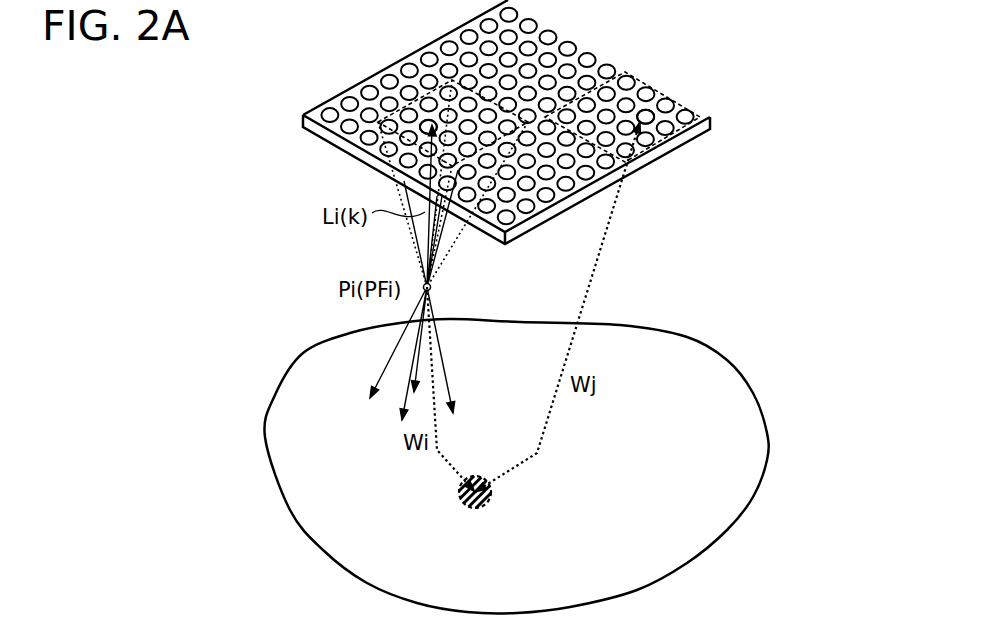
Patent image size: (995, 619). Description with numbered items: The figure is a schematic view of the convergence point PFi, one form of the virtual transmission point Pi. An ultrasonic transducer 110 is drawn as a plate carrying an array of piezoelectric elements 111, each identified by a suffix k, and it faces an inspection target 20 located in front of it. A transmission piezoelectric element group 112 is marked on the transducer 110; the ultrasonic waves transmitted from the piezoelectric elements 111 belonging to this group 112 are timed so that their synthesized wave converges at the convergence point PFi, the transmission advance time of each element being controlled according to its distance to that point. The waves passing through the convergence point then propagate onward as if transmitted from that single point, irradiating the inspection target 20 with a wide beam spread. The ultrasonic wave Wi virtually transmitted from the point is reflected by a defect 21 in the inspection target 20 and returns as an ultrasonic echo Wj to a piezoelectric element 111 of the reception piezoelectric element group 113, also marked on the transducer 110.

The ultrasonic transducer 110 is at (304, 112).
The piezoelectric element 111 is at (430, 119).
The transmission piezoelectric element group 112 is at (390, 116).
The reception piezoelectric element group 113 is at (603, 77).
The inspection target 20 is at (270, 472).
The defect 21 is at (460, 502).